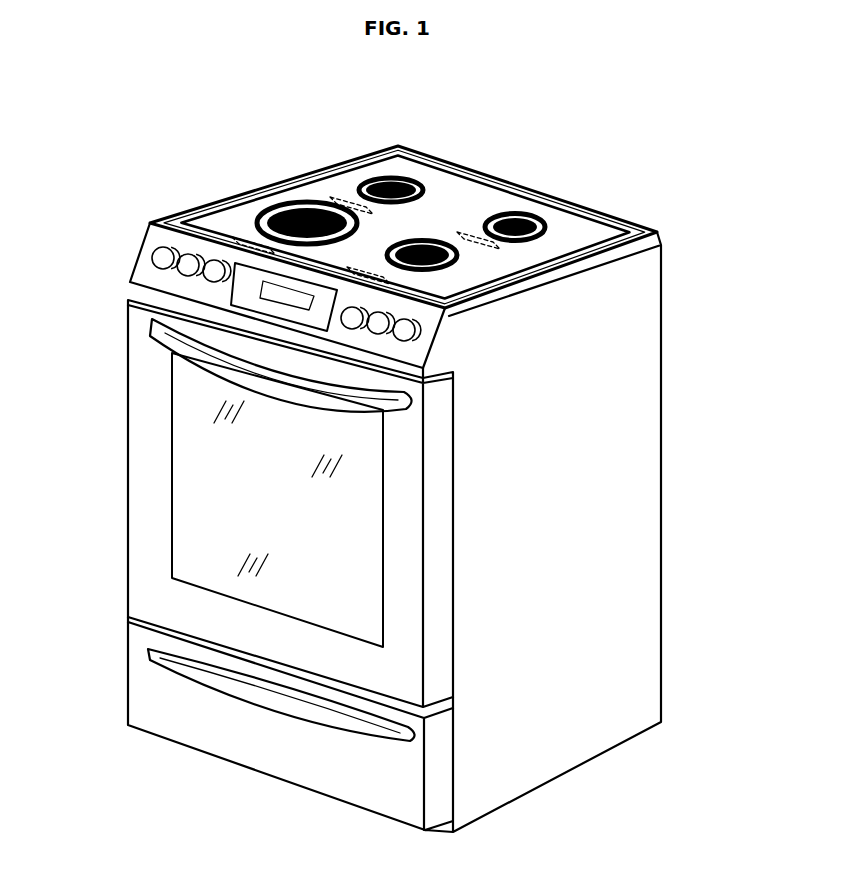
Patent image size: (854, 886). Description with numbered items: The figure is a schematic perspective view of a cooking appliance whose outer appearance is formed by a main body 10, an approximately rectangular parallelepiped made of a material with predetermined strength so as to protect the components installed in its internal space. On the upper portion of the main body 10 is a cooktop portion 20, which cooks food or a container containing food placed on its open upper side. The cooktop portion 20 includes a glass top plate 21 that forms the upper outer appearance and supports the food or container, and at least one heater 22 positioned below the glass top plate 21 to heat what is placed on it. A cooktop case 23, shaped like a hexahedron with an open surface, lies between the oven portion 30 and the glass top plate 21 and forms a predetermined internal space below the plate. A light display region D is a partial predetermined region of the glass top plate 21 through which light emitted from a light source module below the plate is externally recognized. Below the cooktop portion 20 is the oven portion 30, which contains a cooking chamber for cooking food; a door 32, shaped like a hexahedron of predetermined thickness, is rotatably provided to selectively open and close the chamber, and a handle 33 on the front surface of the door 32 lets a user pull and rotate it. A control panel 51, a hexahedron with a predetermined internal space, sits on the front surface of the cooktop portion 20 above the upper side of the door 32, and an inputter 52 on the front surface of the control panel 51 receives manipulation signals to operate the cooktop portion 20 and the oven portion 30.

The main body 10 is at (670, 305).
The cooktop portion 20 is at (403, 201).
The glass top plate 21 is at (317, 187).
The heater 22 is at (398, 178).
The cooktop case 23 is at (618, 250).
The light display region D is at (243, 233).
The oven portion 30 is at (240, 567).
The door 32 is at (143, 495).
The handle 33 is at (163, 335).
The control panel 51 is at (251, 283).
The inputter 52 is at (212, 270).